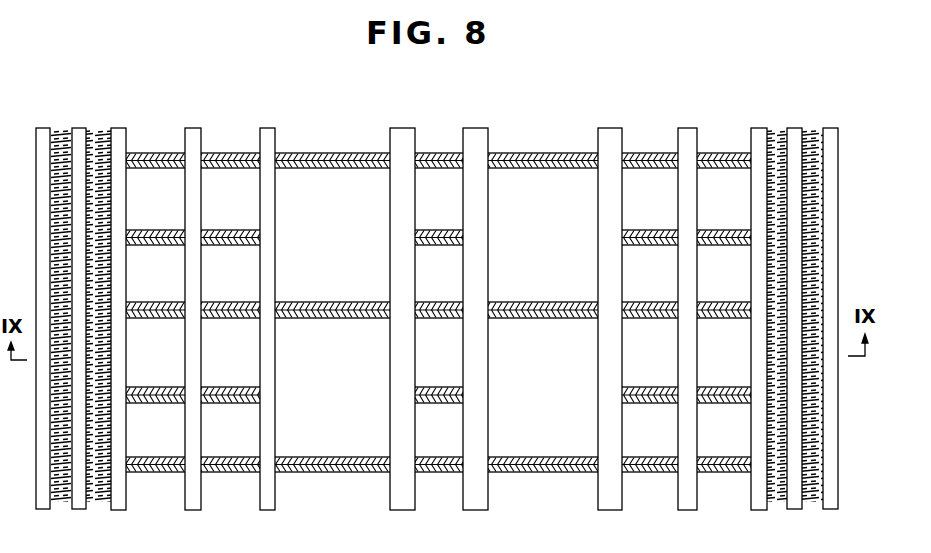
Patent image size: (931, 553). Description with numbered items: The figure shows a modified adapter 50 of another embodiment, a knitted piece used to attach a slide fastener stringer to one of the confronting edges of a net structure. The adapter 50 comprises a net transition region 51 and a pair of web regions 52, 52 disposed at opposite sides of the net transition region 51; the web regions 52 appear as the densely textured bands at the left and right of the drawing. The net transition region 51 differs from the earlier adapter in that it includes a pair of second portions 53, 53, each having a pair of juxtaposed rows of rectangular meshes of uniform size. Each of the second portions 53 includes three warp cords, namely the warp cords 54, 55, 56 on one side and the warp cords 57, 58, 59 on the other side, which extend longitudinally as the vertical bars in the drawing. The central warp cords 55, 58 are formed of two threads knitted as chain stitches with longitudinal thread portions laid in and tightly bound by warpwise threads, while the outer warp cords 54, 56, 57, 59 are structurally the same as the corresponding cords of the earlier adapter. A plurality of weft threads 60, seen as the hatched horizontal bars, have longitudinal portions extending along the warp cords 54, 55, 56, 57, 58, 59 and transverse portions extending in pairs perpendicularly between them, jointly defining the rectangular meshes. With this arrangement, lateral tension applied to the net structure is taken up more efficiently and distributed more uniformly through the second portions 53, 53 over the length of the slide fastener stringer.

The adapter 50 is at (848, 246).
The net transition region 51 is at (698, 91).
The web regions 52 is at (117, 91).
The second portions 53 is at (267, 121).
The warp cord 54 is at (122, 510).
The central warp cord 55 is at (195, 510).
The warp cord 56 is at (269, 510).
The warp cord 57 is at (612, 510).
The central warp cord 58 is at (688, 510).
The warp cord 59 is at (759, 510).
The weft threads 60 is at (146, 231).